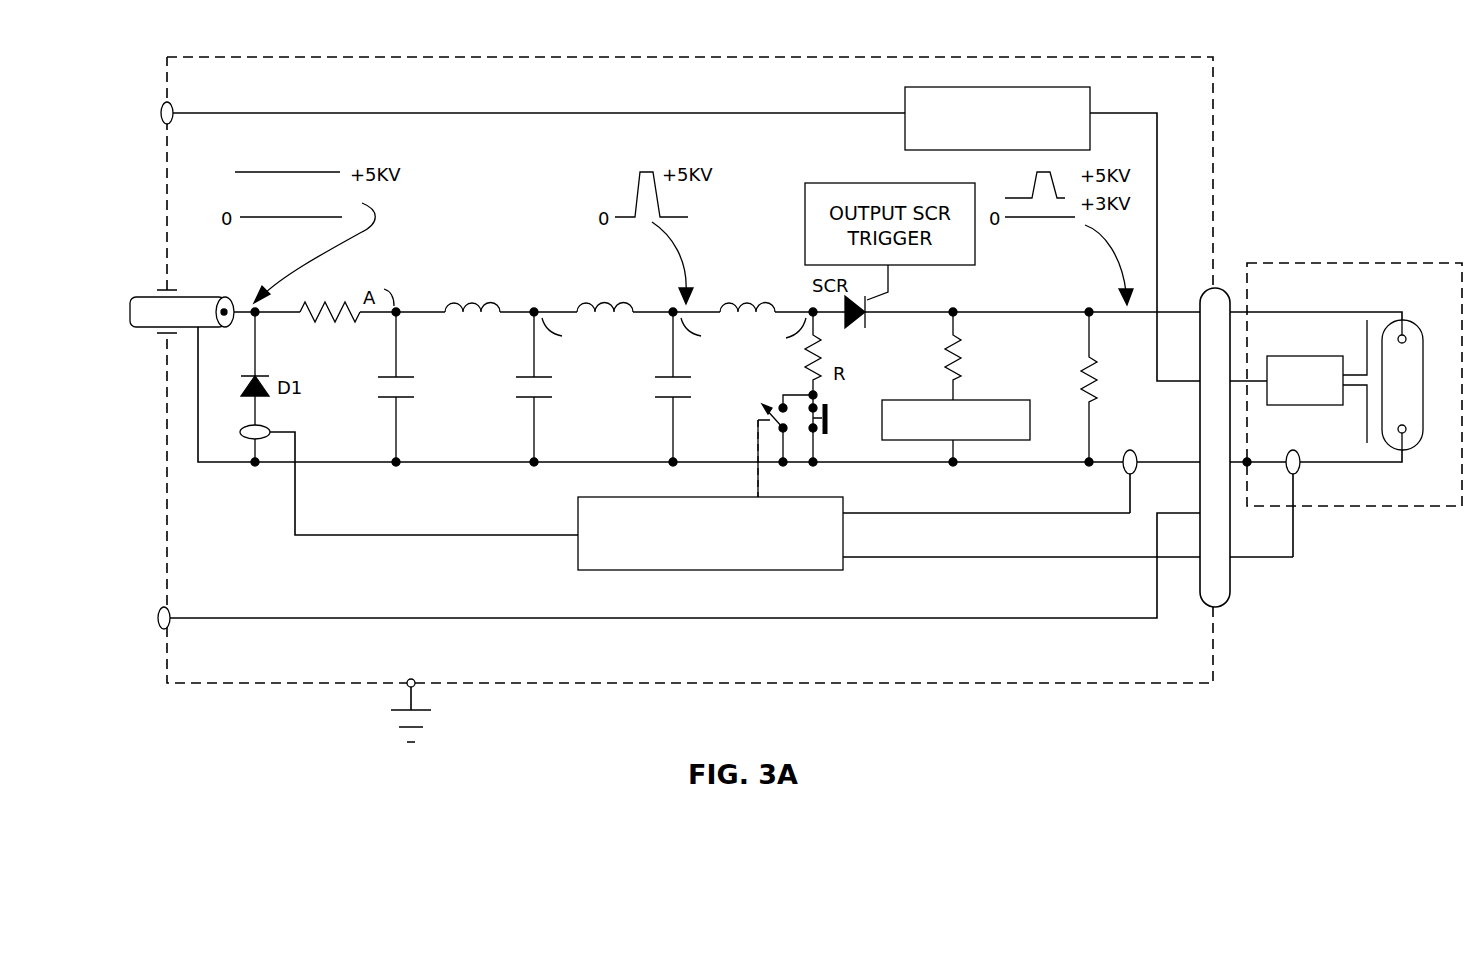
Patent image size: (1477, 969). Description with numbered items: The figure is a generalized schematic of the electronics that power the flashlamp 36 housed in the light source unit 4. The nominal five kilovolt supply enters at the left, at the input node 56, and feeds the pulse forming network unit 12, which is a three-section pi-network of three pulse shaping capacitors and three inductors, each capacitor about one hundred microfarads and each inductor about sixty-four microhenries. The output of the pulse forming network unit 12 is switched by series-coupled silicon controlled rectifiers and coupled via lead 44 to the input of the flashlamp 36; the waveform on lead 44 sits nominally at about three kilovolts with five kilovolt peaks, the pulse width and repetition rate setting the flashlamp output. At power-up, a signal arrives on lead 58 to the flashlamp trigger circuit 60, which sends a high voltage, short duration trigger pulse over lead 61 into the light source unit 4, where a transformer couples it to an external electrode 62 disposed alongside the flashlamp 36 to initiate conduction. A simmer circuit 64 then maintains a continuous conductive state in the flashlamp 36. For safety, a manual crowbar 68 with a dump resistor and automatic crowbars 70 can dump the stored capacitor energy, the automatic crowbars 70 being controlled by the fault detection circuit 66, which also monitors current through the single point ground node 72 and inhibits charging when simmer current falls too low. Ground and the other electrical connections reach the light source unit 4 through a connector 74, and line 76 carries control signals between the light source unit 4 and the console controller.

The light source unit 4 is at (1349, 390).
The pulse forming network unit 12 is at (513, 203).
The flashlamp 36 is at (1416, 452).
The lead 44 is at (1108, 310).
The input node 56 is at (253, 297).
The lead 58 is at (348, 112).
The flashlamp trigger circuit 60 is at (900, 106).
The lead 61 is at (1128, 110).
The external electrode 62 is at (1365, 340).
The simmer circuit 64 is at (990, 400).
The fault detection circuit 66 is at (578, 556).
The manual crowbar 68 is at (831, 430).
The automatic crowbars 70 is at (773, 446).
The single point ground node 72 is at (413, 680).
The connector 74 is at (1228, 608).
The line 76 is at (346, 616).